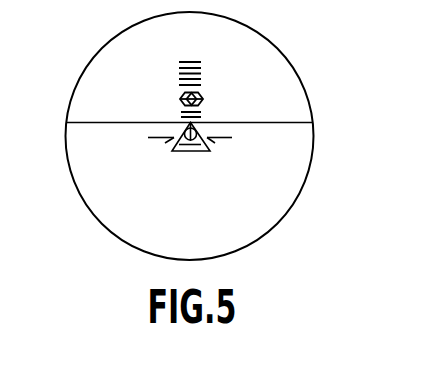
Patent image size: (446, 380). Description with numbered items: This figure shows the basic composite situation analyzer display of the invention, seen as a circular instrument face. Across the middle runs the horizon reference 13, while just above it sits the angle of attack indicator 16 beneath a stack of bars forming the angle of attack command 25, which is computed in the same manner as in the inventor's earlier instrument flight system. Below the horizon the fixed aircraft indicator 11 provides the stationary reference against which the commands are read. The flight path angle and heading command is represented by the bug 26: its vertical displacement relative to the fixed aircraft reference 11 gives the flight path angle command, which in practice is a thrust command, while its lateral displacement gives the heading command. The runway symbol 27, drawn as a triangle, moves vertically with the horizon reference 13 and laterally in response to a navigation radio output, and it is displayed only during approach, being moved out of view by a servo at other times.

The fixed aircraft indicator 11 is at (232, 138).
The horizon reference 13 is at (271, 121).
The angle of attack indicator 16 is at (203, 101).
The angle of attack command 25 is at (192, 94).
The flight path angle and heading command bug 26 is at (185, 139).
The runway symbol 27 is at (182, 152).